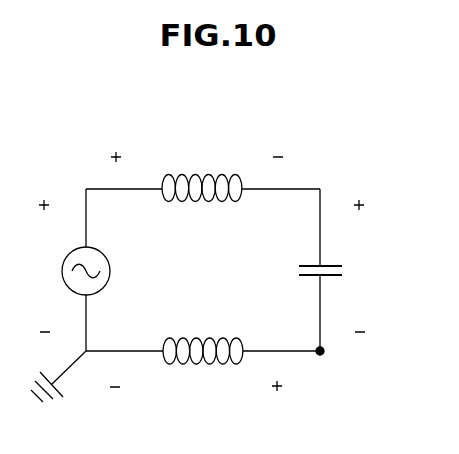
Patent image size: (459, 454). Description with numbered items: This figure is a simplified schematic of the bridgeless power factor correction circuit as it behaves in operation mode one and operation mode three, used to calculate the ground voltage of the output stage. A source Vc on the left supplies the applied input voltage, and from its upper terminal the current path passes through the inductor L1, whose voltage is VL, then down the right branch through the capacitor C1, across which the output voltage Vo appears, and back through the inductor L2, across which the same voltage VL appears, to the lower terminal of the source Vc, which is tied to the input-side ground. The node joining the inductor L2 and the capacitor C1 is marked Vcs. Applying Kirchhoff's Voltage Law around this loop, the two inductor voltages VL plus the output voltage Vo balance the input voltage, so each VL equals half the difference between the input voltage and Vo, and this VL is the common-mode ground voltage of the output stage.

The inductor L1 is at (202, 204).
The inductor L2 is at (203, 335).
The capacitor C1 is at (304, 271).
The voltage source Vc is at (70, 271).
The output voltage Vo is at (359, 272).
The inductor voltage VL is at (198, 276).
The current sense voltage node Vcs is at (323, 354).